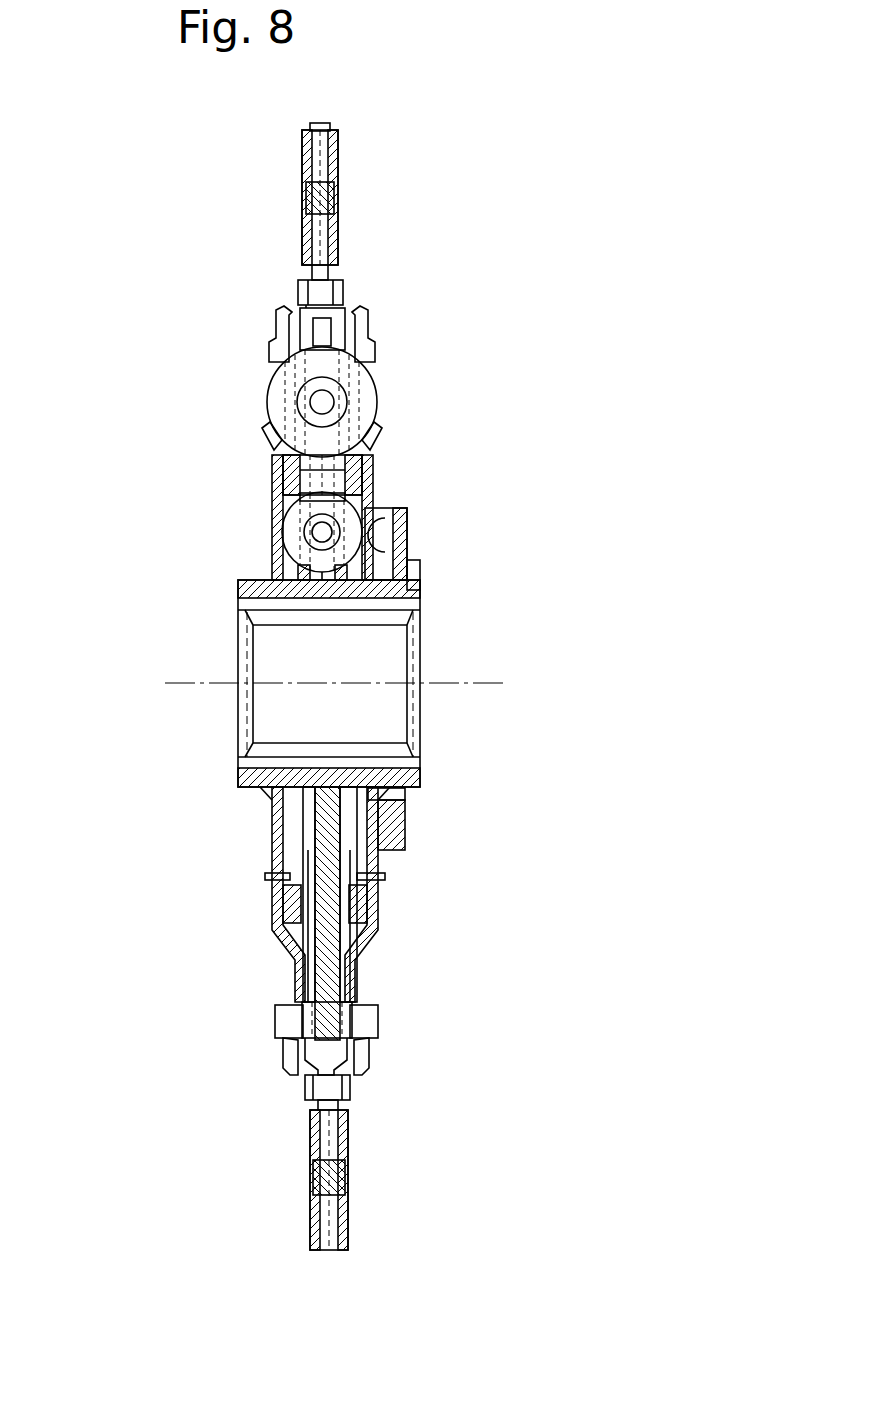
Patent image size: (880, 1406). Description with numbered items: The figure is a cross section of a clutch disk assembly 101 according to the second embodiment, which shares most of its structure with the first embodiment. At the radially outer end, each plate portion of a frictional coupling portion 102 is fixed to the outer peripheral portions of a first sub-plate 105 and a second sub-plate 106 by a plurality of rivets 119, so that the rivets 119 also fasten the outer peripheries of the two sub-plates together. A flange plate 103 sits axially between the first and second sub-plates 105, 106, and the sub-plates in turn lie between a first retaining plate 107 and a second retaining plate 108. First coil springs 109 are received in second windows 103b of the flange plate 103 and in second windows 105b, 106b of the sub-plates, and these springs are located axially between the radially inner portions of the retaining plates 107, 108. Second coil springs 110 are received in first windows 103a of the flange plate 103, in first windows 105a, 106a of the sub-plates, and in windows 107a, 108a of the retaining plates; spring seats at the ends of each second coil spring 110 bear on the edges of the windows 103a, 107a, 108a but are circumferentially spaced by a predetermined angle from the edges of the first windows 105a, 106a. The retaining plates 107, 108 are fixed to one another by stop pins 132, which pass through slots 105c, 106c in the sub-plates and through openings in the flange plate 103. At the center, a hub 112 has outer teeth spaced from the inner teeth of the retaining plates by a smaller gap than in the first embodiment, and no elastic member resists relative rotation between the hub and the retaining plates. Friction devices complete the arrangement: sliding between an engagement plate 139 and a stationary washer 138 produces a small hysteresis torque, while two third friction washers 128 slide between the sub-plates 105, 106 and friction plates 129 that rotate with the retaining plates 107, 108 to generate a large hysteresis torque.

The clutch disk assembly 101 is at (490, 354).
The frictional coupling portion 102 is at (270, 197).
The flange plate 103 is at (322, 838).
The first windows 103a is at (338, 322).
The second windows 103b is at (380, 505).
The first sub-plate 105 is at (303, 865).
The first windows 105a is at (280, 345).
The second windows 105b is at (285, 510).
The slots 105c is at (282, 1025).
The second sub-plate 106 is at (357, 865).
The first windows 106a is at (368, 328).
The second windows 106b is at (375, 494).
The slots 106c is at (378, 1020).
The first retaining plate 107 is at (272, 476).
The window 107a is at (258, 410).
The second retaining plate 108 is at (375, 478).
The window 108a is at (387, 400).
The first coil springs 109 is at (285, 533).
The second coil springs 110 is at (272, 395).
The hub 112 is at (428, 605).
The rivets 119 is at (285, 290).
The third friction washers 128 is at (290, 920).
The friction plates 129 is at (285, 893).
The stop pins 132 is at (378, 1005).
The stationary washer 138 is at (403, 840).
The engagement plate 139 is at (403, 815).